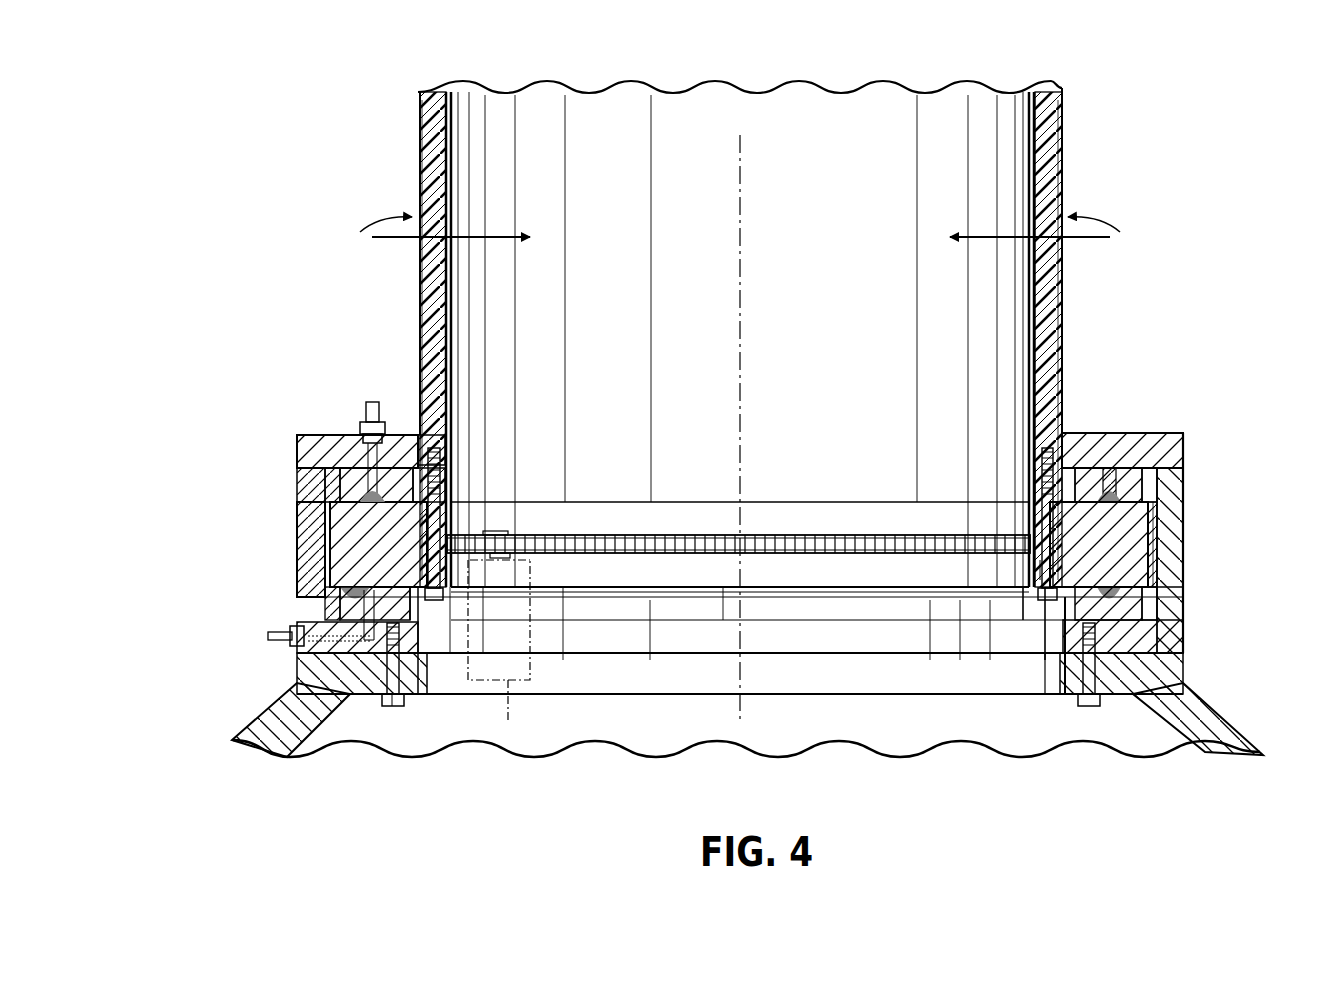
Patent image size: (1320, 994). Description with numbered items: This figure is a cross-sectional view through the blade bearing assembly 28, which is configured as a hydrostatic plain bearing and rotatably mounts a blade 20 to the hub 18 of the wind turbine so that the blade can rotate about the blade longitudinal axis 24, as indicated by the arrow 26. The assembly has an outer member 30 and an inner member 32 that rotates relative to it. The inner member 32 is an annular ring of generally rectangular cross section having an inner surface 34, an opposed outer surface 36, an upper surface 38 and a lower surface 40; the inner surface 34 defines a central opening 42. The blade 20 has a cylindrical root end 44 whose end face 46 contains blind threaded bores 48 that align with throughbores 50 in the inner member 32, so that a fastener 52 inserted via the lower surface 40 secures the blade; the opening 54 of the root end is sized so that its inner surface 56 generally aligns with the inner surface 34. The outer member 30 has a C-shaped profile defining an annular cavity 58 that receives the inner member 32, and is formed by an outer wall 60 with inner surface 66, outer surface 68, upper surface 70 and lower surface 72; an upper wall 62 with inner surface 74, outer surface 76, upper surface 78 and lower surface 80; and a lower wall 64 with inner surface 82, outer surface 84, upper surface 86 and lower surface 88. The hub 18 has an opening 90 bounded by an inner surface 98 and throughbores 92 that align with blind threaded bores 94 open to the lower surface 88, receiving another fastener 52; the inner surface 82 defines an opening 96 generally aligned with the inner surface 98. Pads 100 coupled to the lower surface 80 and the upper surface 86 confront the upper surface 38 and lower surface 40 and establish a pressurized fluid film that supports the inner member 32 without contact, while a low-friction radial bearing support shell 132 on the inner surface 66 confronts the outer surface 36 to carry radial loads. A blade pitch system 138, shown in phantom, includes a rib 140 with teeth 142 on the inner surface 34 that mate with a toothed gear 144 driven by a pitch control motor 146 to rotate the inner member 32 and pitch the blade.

The hub 18 is at (1240, 740).
The blade 20 is at (1063, 108).
The blade longitudinal axis 24 is at (735, 232).
The arrow 26 is at (372, 237).
The blade bearing assembly 28 is at (1240, 430).
The outer member 30 is at (296, 522).
The inner member 32 is at (1158, 568).
The inner surface 34 is at (835, 522).
The outer surface 36 is at (1160, 514).
The upper surface 38 is at (1068, 468).
The lower surface 40 is at (335, 598).
The central opening 42 is at (685, 520).
The root end 44 is at (432, 132).
The end face 46 is at (1040, 505).
The threaded bore 48 is at (440, 470).
The throughbore 50 is at (1040, 566).
The fastener 52 is at (393, 708).
The opening 54 is at (1035, 190).
The inner surface 56 is at (832, 318).
The annular cavity 58 is at (335, 480).
The outer wall 60 is at (1185, 472).
The upper wall 62 is at (1180, 435).
The lower wall 64 is at (1185, 632).
The inner surface 66 is at (1150, 660).
The outer surface 68 is at (1150, 598).
The upper surface 70 is at (310, 470).
The lower surface 72 is at (318, 650).
The inner surface 74 is at (430, 440).
The outer surface 76 is at (297, 442).
The upper surface 78 is at (1140, 440).
The lower surface 80 is at (1160, 490).
The inner surface 82 is at (1060, 640).
The outer surface 84 is at (1185, 655).
The upper surface 86 is at (345, 600).
The lower surface 88 is at (292, 688).
The opening 90 is at (1060, 690).
The throughbore 92 is at (360, 700).
The threaded bore 94 is at (405, 635).
The opening 96 is at (835, 642).
The inner surface 98 is at (675, 678).
The pad 100 is at (355, 468).
The radial bearing support shell 132 is at (1160, 540).
The blade pitch system 138 is at (532, 637).
The rib 140 is at (768, 535).
The teeth 142 is at (585, 535).
The toothed gear 144 is at (505, 531).
The pitch control motor 146 is at (508, 712).